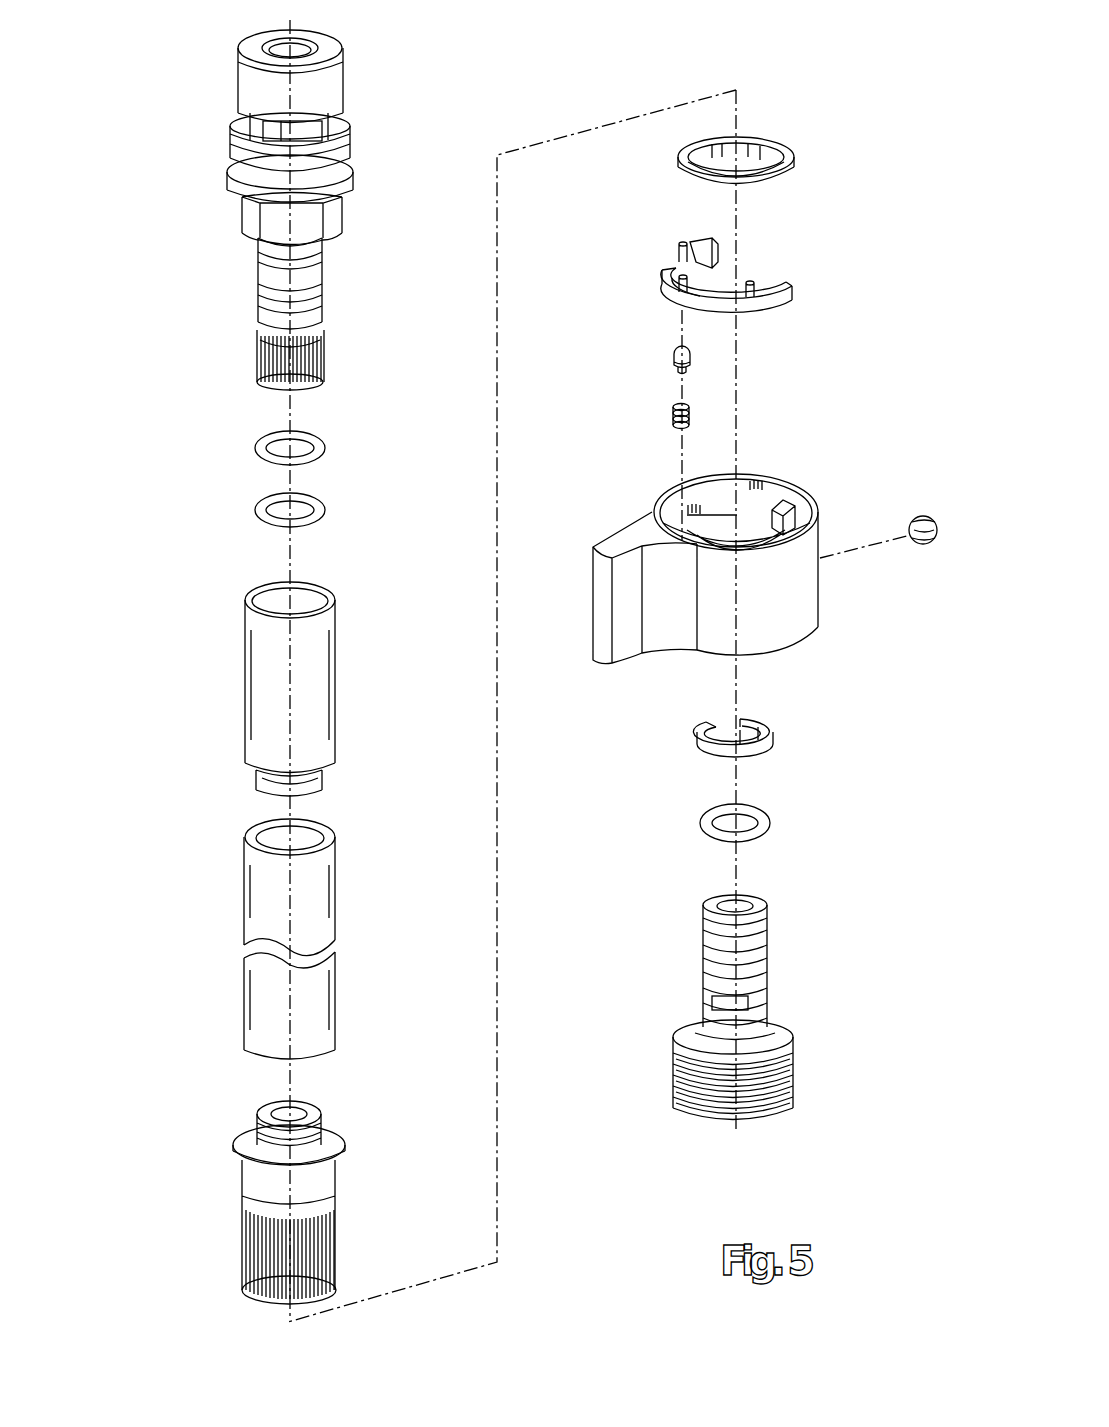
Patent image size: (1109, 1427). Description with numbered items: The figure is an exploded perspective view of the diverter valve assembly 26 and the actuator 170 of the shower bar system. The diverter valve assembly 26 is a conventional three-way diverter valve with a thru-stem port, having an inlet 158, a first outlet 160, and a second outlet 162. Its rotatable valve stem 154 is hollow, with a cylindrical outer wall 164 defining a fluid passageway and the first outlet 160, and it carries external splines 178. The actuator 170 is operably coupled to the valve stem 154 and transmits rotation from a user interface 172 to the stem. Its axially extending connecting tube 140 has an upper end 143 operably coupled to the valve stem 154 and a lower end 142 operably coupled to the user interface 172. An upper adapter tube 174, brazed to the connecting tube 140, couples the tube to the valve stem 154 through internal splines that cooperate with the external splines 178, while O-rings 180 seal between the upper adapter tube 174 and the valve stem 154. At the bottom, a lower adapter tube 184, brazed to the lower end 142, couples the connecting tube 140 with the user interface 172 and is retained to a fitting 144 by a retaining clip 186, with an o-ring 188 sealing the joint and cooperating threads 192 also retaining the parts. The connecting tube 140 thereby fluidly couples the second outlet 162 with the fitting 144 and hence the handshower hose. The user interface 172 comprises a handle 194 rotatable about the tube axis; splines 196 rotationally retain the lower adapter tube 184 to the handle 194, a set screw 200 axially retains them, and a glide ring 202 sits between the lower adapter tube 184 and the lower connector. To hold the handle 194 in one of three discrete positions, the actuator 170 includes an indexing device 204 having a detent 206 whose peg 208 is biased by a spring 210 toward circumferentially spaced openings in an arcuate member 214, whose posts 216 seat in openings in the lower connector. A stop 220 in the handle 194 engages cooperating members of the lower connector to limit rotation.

The diverter valve assembly 26 is at (142, 120).
The second outlet 162 is at (300, 45).
The inlet 158 is at (340, 126).
The cylindrical outer wall 164 is at (258, 265).
The valve stem 154 is at (262, 328).
The external splines 178 is at (322, 372).
The first outlet 160 is at (312, 390).
The O-rings 180 is at (255, 512).
The actuator 170 is at (185, 623).
The upper adapter tube 174 is at (245, 680).
The upper end 143 is at (355, 830).
The connecting tube 140 is at (245, 878).
The lower end 142 is at (355, 1048).
The lower adapter tube 184 is at (240, 1175).
The splines 196 is at (245, 1268).
The glide ring 202 is at (790, 155).
The indexing device 204 is at (612, 292).
The posts 216 is at (755, 282).
The arcuate member 214 is at (790, 300).
The detent 206 is at (624, 364).
The peg 208 is at (672, 362).
The spring 210 is at (672, 420).
The user interface 172 is at (880, 465).
The stop 220 is at (790, 500).
The handle 194 is at (790, 615).
The set screw 200 is at (925, 545).
The retaining clip 186 is at (702, 740).
The o-ring 188 is at (765, 825).
The threads 192 is at (700, 915).
The fitting 144 is at (785, 1025).